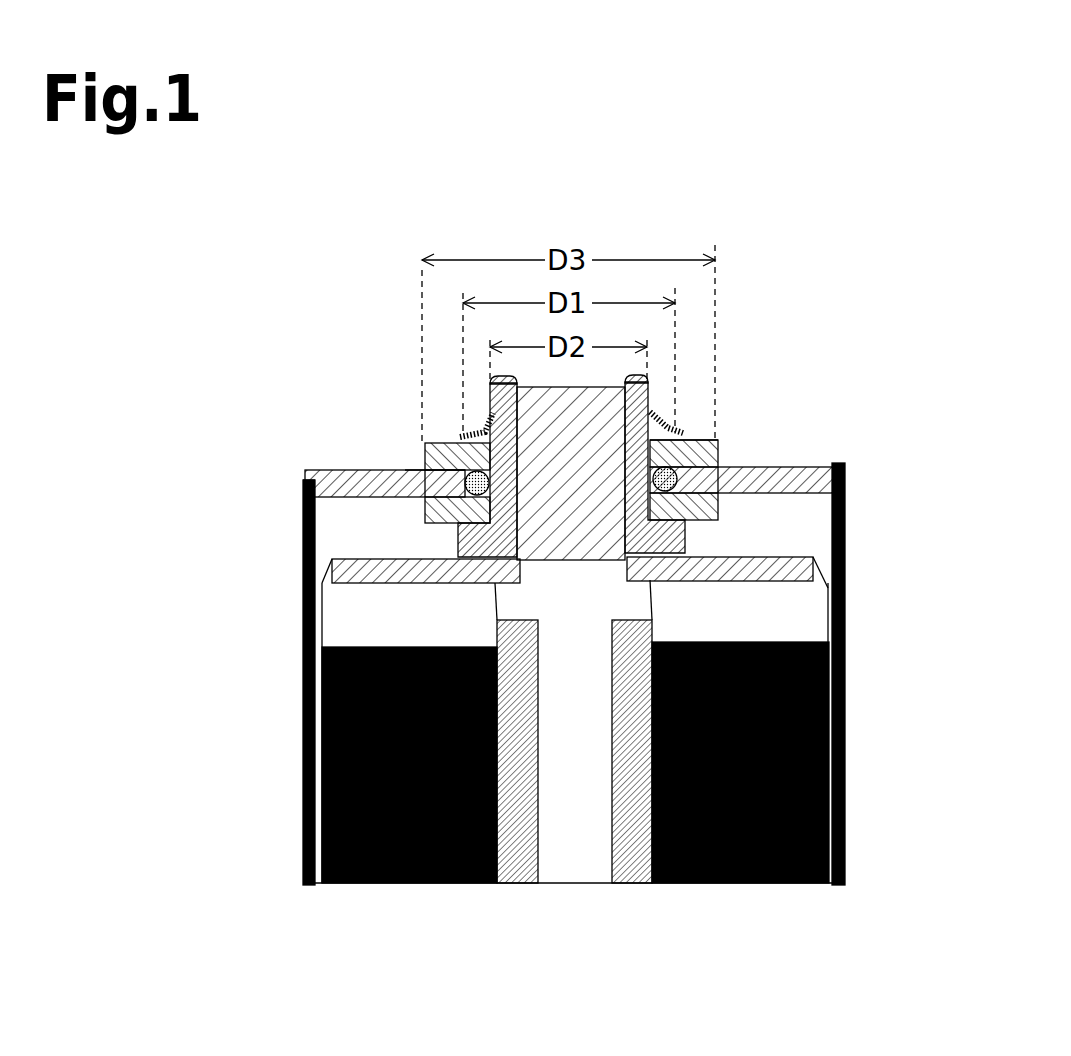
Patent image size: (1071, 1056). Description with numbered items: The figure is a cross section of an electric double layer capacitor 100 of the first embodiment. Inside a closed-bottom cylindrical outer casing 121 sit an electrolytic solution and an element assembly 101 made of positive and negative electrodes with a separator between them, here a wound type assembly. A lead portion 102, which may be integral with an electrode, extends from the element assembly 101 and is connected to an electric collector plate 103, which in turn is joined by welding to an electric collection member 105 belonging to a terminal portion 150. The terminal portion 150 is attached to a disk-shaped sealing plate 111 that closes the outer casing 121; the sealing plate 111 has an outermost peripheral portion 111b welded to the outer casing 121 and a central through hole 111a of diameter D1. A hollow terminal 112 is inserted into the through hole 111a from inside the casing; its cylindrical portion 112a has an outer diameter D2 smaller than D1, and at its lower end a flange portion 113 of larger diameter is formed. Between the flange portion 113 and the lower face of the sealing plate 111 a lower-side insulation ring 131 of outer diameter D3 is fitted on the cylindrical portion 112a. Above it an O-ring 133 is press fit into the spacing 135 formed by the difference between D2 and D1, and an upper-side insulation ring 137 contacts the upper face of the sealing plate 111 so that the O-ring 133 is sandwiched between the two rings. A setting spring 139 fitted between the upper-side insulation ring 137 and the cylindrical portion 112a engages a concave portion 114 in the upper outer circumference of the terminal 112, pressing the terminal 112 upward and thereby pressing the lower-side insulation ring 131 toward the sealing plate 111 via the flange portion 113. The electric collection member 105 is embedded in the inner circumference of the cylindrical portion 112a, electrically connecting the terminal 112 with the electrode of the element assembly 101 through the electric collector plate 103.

The electric double layer capacitor 100 is at (598, 203).
The element assembly 101 is at (832, 760).
The lead portion 102 is at (807, 623).
The electric collector plate 103 is at (813, 558).
The electric collection member 105 is at (568, 545).
The sealing plate 111 is at (346, 498).
The through hole 111a is at (418, 476).
The outermost peripheral portion 111b is at (301, 481).
The terminal 112 is at (652, 378).
The cylindrical portion 112a is at (488, 379).
The flange portion 113 is at (458, 541).
The concave portion 114 is at (492, 405).
The outer casing 121 is at (848, 707).
The lower-side insulation ring 131 is at (720, 504).
The O-ring 133 is at (813, 466).
The spacing 135 is at (718, 458).
The upper-side insulation ring 137 is at (694, 440).
The setting spring 139 is at (652, 412).
The terminal portion 150 is at (822, 427).